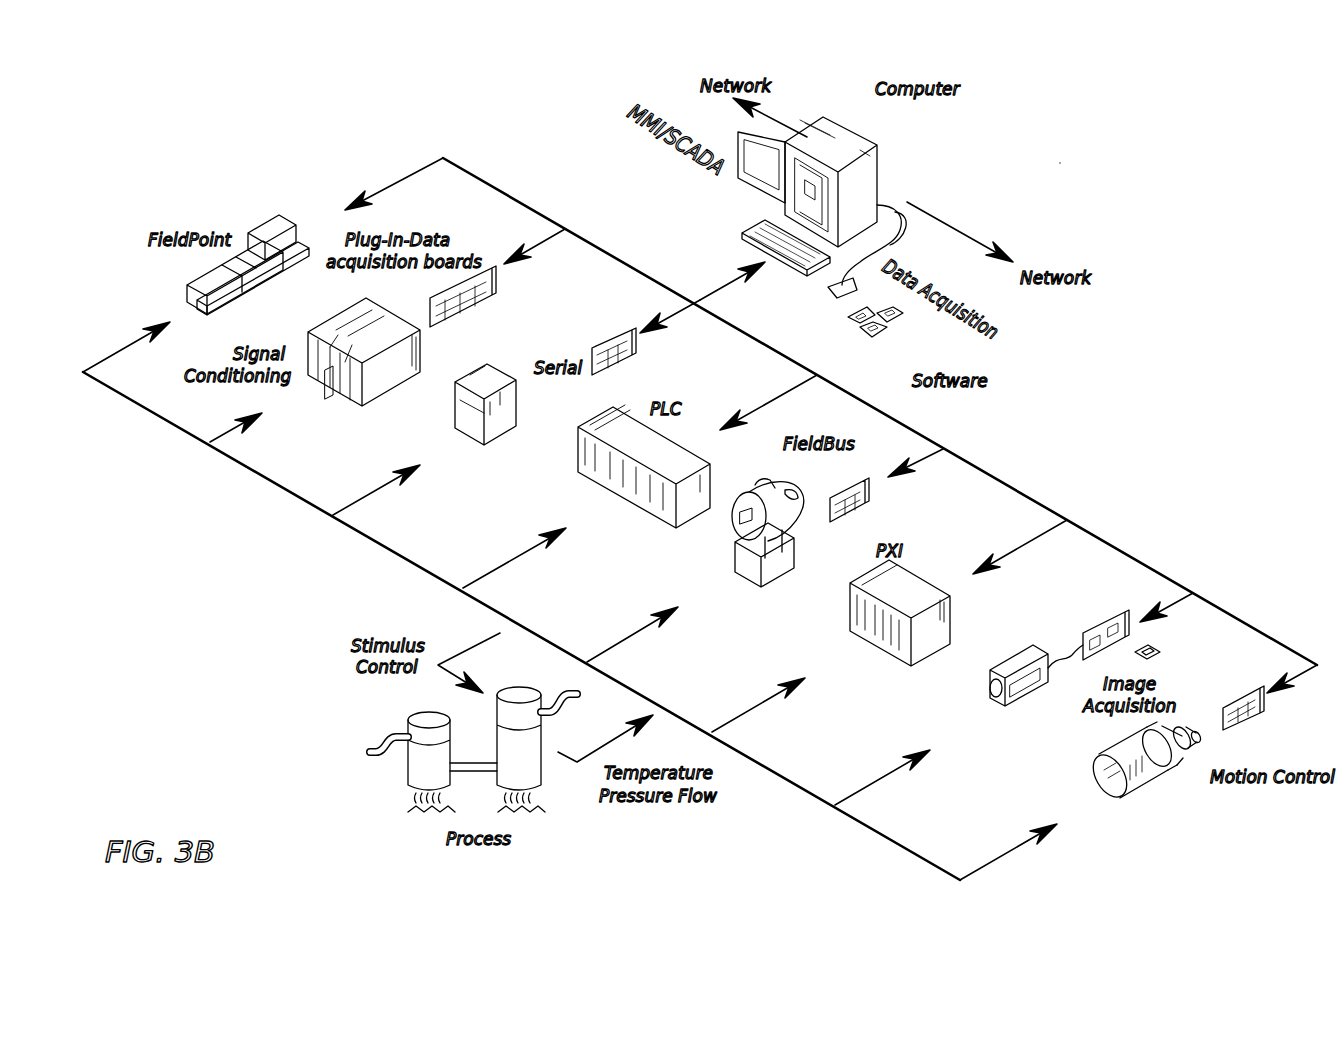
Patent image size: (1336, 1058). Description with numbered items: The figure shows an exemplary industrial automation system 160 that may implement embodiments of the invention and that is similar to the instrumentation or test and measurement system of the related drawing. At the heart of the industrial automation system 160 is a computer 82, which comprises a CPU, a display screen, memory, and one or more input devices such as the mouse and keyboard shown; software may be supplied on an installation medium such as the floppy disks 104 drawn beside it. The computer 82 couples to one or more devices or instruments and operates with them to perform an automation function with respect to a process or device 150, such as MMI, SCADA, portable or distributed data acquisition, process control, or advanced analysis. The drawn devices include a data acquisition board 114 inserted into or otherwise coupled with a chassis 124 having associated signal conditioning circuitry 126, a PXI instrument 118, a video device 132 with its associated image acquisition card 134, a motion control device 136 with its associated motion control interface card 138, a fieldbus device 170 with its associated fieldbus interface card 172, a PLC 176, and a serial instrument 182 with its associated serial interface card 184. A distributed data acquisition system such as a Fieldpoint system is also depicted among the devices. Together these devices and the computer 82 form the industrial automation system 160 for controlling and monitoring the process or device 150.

The industrial automation system 160 is at (1058, 165).
The computer 82 is at (850, 138).
The floppy disks 104 is at (877, 337).
The data acquisition board 114 is at (470, 318).
The PXI instrument 118 is at (915, 588).
The chassis 124 is at (334, 332).
The signal conditioning circuitry 126 is at (327, 390).
The video device 132 is at (1020, 653).
The image acquisition card 134 is at (1088, 625).
The motion control device 136 is at (1145, 788).
The motion control interface card 138 is at (1258, 730).
The process or device 150 is at (383, 737).
The fieldbus device 170 is at (752, 578).
The fieldbus interface card 172 is at (845, 480).
The PLC 176 is at (598, 480).
The serial instrument 182 is at (460, 432).
The serial interface card 184 is at (605, 344).